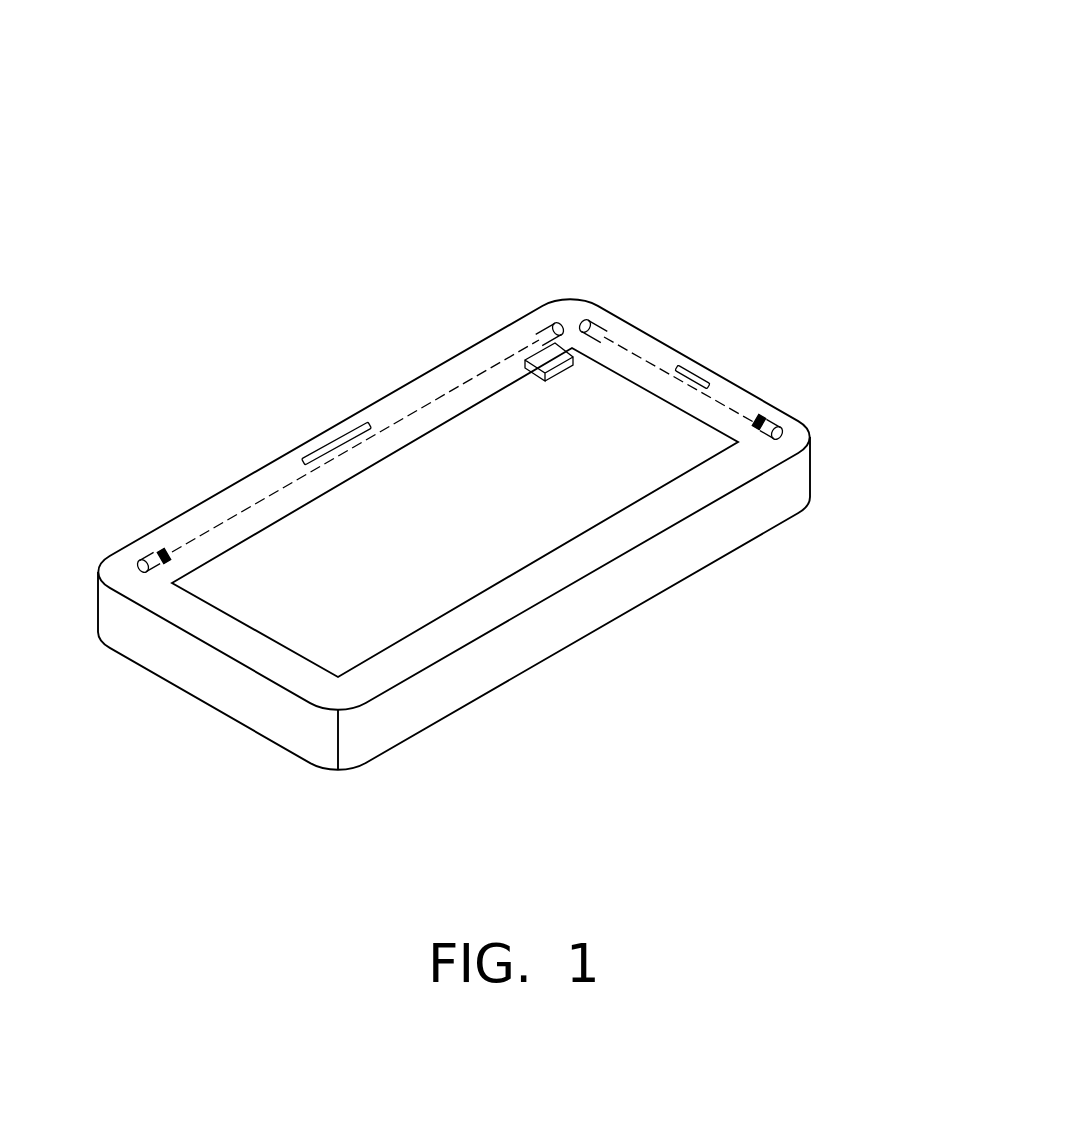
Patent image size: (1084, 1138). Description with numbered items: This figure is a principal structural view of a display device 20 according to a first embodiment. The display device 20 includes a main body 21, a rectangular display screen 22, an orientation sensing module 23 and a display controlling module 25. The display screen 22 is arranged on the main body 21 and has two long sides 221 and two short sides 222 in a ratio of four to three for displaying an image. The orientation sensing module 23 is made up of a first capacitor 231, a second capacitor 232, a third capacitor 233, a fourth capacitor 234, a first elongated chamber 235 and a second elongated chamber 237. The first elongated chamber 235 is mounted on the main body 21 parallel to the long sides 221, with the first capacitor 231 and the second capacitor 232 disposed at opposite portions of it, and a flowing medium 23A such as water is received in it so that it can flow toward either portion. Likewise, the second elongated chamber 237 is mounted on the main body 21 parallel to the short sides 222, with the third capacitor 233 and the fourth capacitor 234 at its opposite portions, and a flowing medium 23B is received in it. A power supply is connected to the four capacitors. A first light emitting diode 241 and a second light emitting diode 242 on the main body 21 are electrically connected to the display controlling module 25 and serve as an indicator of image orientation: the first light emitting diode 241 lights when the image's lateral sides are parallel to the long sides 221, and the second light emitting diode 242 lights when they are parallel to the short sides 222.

The display device 20 is at (509, 71).
The main body 21 is at (560, 620).
The display screen 22 is at (570, 493).
The long sides 221 is at (705, 467).
The short sides 222 is at (813, 495).
The orientation sensing module 23 is at (960, 256).
The first capacitor 231 is at (553, 326).
The second capacitor 232 is at (143, 559).
The third capacitor 233 is at (588, 321).
The fourth capacitor 234 is at (785, 430).
The first elongated chamber 235 is at (460, 380).
The second elongated chamber 237 is at (667, 343).
The flowing medium 23A is at (163, 552).
The flowing medium 23B is at (763, 427).
The first light emitting diode 241 is at (333, 443).
The second light emitting diode 242 is at (698, 372).
The display controlling module 25 is at (547, 360).